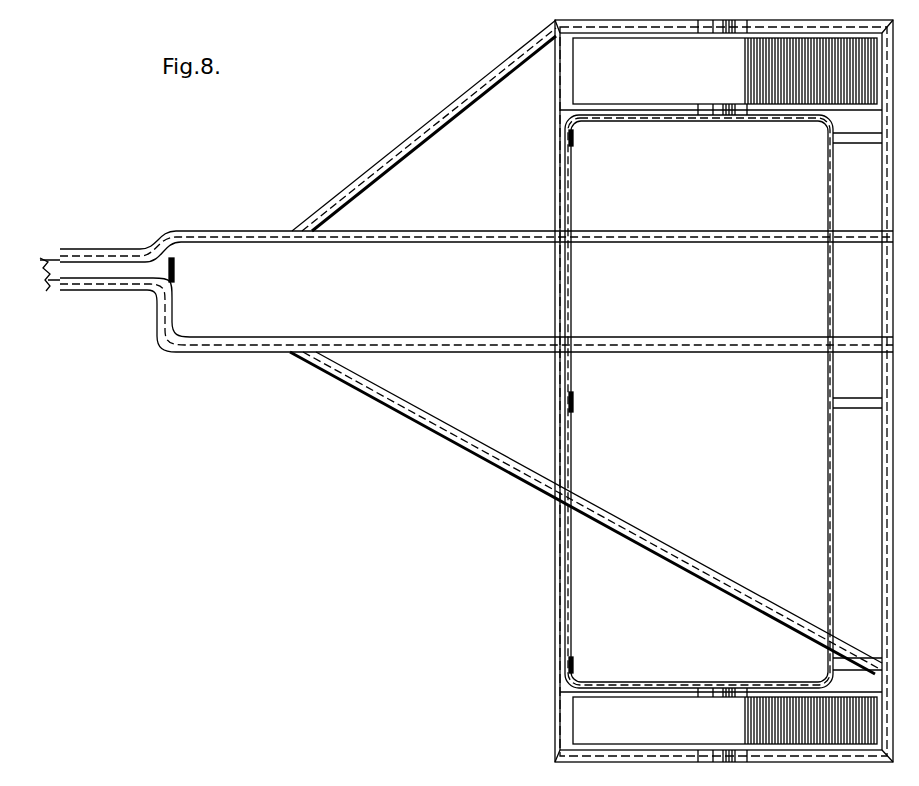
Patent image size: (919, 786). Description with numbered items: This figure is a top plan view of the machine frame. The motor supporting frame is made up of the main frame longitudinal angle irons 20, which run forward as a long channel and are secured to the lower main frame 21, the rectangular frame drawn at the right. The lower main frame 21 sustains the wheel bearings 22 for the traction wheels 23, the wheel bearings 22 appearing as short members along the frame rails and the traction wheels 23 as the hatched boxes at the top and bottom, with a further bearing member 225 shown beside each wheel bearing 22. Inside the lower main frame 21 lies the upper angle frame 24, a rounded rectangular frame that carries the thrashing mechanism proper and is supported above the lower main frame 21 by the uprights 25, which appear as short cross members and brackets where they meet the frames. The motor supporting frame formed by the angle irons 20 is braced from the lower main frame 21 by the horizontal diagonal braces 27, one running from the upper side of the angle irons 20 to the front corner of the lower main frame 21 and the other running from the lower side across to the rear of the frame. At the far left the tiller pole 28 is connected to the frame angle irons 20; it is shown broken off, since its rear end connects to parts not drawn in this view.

The main frame longitudinal angle irons 20 is at (210, 228).
The lower main frame 21 is at (830, 27).
The wheel bearings 22 is at (724, 23).
The spacer rail 225 is at (718, 770).
The traction wheels 23 is at (578, 86).
The upper angle frame 24 is at (833, 176).
The uprights 25 is at (574, 135).
The horizontal diagonal braces 27 is at (388, 163).
The tiller pole 28 is at (53, 254).